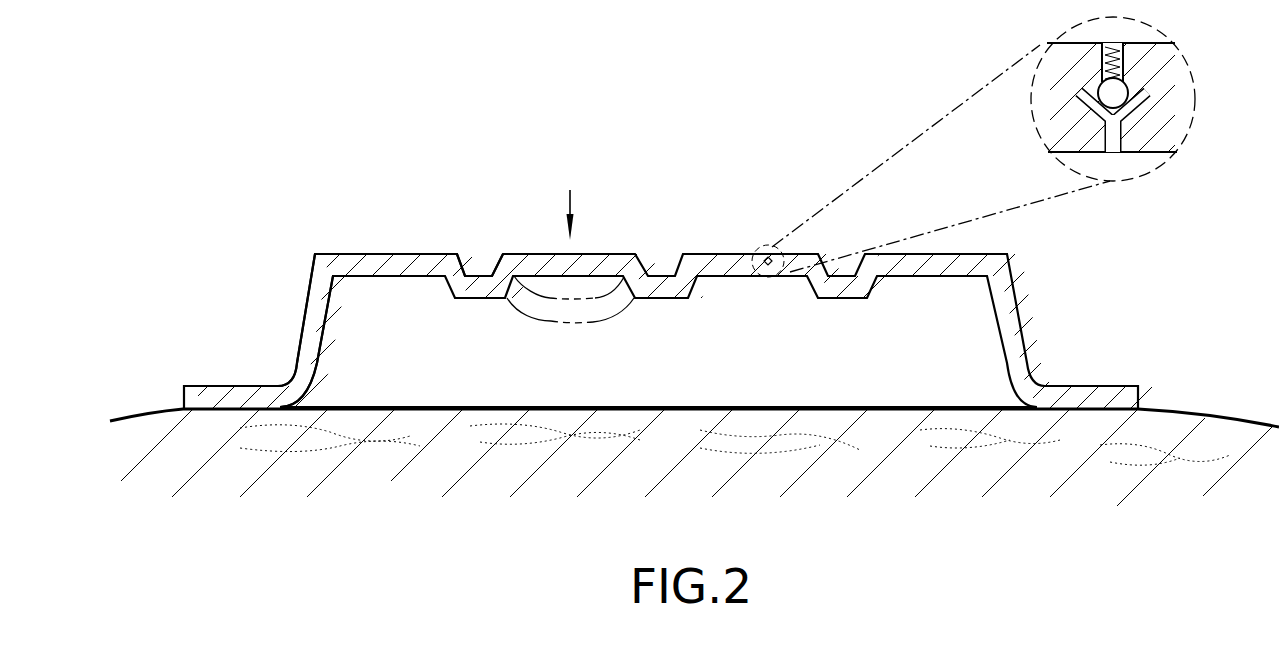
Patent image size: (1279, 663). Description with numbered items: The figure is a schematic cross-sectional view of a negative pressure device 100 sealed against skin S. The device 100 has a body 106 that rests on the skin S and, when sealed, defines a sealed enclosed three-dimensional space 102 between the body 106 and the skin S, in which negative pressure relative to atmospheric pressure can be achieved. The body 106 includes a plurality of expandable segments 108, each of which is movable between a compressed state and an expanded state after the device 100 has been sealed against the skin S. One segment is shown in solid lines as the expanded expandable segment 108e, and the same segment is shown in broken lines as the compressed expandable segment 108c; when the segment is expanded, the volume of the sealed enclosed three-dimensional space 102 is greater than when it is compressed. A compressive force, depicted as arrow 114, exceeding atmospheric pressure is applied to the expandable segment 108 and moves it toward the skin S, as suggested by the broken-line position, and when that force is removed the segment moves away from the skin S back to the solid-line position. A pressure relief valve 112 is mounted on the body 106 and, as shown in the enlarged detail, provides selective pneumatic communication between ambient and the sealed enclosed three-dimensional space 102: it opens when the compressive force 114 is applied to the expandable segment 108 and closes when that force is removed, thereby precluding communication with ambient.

The negative pressure device 100 is at (693, 200).
The sealed enclosed three-dimensional space 102 is at (683, 357).
The body 106 is at (317, 310).
The expandable segment 108 is at (392, 255).
The expanded expandable segment 108e is at (527, 255).
The compressed expandable segment 108c is at (552, 306).
The pressure relief valve 112 is at (768, 257).
The compressive force 114 is at (573, 200).
The skin S is at (1235, 417).